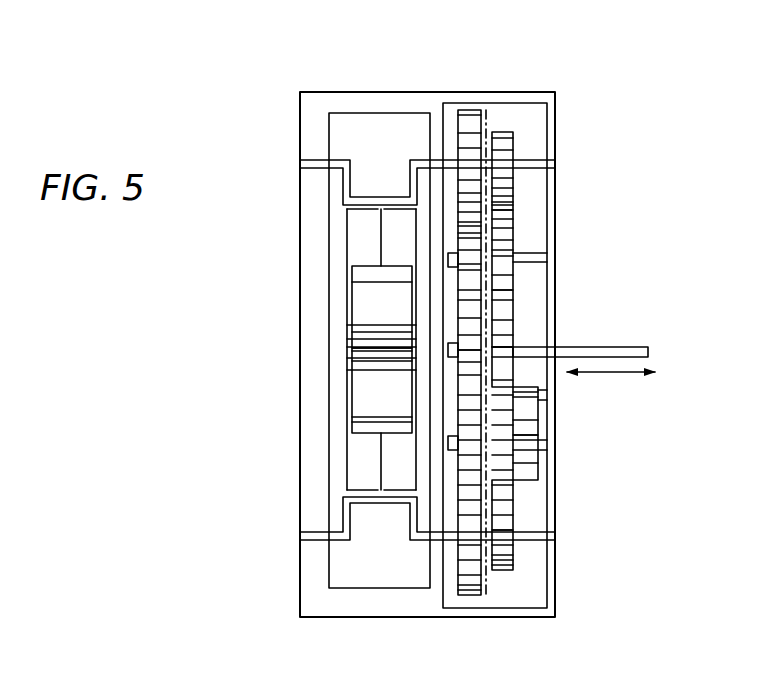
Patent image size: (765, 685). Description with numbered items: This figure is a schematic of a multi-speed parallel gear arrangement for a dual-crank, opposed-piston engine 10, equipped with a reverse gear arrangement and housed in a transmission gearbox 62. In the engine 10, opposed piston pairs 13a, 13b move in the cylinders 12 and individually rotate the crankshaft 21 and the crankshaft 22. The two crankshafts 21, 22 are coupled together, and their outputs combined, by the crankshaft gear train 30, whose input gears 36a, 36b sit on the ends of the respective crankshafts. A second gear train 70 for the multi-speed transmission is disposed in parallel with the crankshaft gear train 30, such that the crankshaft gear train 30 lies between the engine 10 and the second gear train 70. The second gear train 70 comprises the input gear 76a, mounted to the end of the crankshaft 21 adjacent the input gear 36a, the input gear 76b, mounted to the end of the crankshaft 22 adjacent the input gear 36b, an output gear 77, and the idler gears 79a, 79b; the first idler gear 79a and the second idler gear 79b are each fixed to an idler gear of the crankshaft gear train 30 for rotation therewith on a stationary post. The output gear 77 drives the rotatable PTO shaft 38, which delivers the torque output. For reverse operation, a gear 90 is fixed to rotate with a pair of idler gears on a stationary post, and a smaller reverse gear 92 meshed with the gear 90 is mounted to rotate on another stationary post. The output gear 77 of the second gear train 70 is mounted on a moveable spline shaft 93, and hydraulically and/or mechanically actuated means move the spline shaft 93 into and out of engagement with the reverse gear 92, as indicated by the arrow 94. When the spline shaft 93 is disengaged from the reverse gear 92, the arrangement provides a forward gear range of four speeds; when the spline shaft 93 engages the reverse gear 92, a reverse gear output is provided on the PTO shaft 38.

The engine 10 is at (338, 91).
The crankshaft 21 is at (316, 158).
The crankshaft 22 is at (320, 532).
The cylinders 12 is at (345, 250).
The opposed piston 13a is at (365, 305).
The opposed piston 13b is at (365, 385).
The transmission gearbox 62 is at (573, 88).
The second gear train 70 is at (500, 102).
The crankshaft gear train 30 is at (445, 102).
The input gear 36a is at (468, 109).
The input gear 36b is at (472, 583).
The input gear 76a is at (513, 147).
The input gear 76b is at (525, 522).
The first idler gear 79a is at (525, 231).
The second idler gear 79b is at (525, 492).
The output gear 77 is at (525, 322).
The spline shaft 93 is at (533, 348).
The PTO shaft 38 is at (645, 346).
The arrow 94 is at (620, 373).
The reverse gear 92 is at (541, 402).
The gear 90 is at (545, 455).